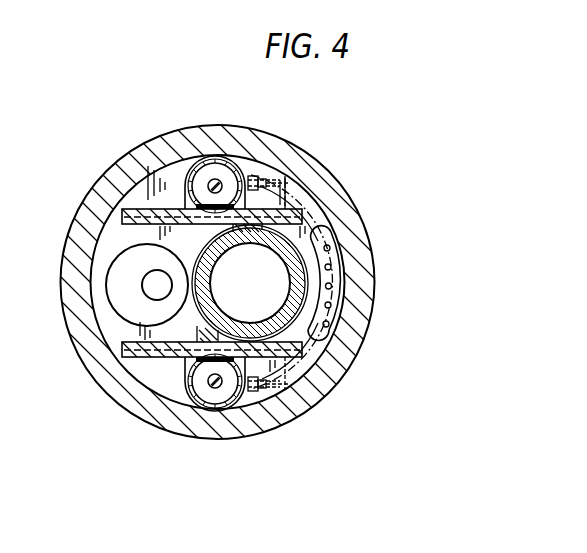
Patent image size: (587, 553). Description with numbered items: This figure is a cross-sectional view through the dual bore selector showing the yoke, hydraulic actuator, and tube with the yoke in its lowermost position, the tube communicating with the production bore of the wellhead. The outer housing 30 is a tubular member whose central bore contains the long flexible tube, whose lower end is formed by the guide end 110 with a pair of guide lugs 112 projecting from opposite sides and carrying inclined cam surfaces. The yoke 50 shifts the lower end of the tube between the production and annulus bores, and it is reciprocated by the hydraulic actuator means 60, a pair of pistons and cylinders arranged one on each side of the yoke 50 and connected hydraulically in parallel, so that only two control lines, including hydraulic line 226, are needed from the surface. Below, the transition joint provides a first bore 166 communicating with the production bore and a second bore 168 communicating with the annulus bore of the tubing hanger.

The housing 30 is at (343, 351).
The yoke 50 is at (157, 373).
The hydraulic actuator means 60 is at (195, 400).
The guide end 110 is at (293, 288).
The guide lugs 112 is at (328, 413).
The first bore 166 is at (258, 258).
The second bore 168 is at (148, 284).
The hydraulic line 226 is at (298, 372).